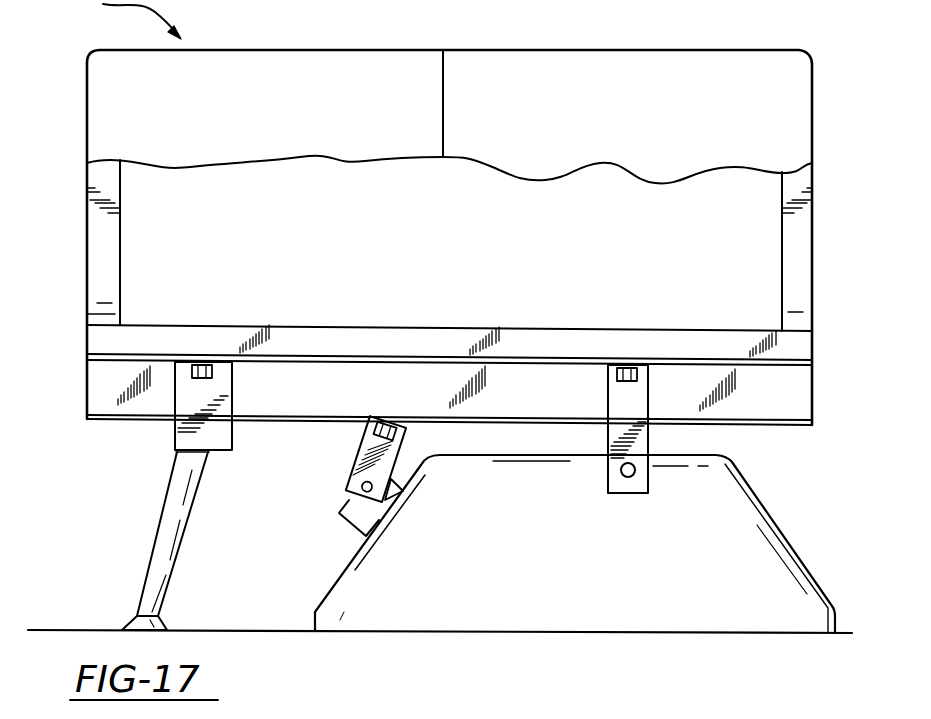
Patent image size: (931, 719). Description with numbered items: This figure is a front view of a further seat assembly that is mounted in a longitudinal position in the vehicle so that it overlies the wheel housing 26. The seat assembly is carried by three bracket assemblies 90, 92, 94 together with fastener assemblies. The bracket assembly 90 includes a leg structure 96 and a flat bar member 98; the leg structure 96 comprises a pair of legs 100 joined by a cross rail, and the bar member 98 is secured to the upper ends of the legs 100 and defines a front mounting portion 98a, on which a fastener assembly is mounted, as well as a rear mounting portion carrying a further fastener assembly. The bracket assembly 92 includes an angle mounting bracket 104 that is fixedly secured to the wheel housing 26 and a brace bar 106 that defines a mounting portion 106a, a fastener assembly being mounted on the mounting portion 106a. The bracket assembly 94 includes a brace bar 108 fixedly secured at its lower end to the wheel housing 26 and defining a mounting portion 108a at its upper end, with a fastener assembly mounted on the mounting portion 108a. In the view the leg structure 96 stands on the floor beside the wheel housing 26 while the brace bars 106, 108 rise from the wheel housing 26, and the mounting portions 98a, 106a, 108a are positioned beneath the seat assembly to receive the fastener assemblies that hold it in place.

The wheel housing 26 is at (663, 562).
The bracket assembly 90 is at (175, 454).
The bracket assembly 92 is at (429, 470).
The bracket assembly 94 is at (605, 437).
The leg structure 96 is at (55, 565).
The flat bar member 98 is at (175, 422).
The front mounting portion 98a is at (187, 362).
The legs 100 is at (171, 558).
The angle mounting bracket 104 is at (385, 512).
The brace bar 106 is at (362, 455).
The mounting portion 106a is at (392, 424).
The brace bar 108 is at (648, 440).
The mounting portion 108a is at (630, 365).